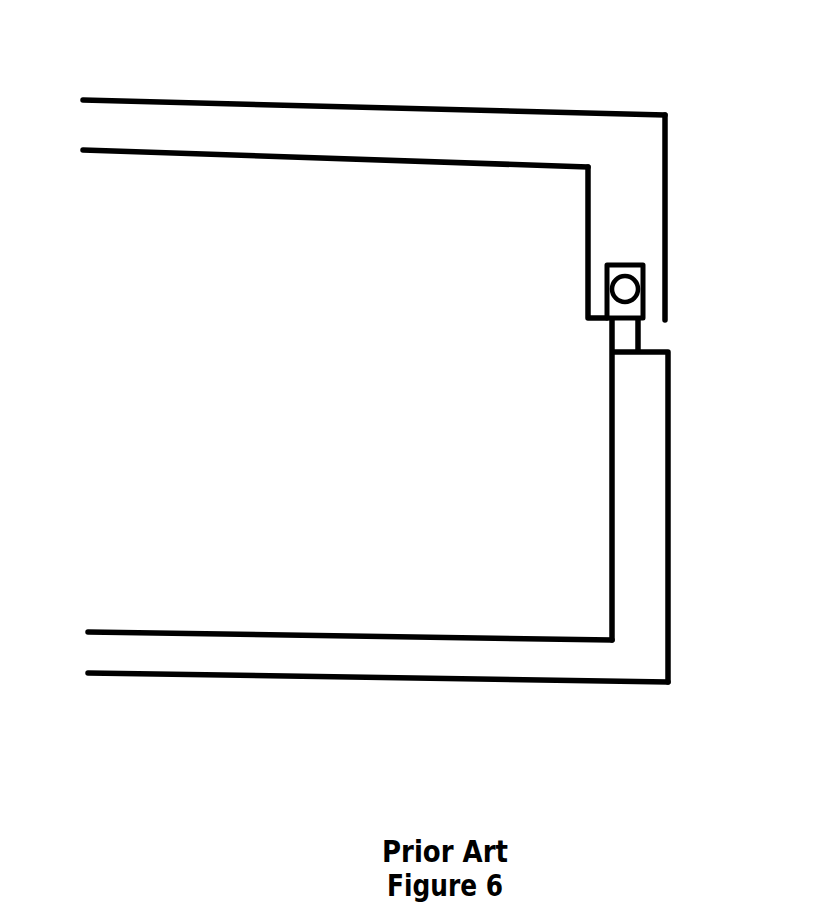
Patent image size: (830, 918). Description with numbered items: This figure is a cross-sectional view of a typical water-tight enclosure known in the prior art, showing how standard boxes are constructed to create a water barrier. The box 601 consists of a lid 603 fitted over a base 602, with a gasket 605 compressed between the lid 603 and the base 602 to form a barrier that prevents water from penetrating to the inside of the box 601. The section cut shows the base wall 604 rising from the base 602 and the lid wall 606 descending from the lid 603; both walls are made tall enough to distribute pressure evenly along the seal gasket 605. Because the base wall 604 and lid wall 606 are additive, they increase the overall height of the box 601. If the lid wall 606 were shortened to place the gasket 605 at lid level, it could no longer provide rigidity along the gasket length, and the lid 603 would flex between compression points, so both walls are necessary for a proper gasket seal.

The box 601 is at (428, 404).
The base 602 is at (540, 655).
The lid 603 is at (443, 135).
The base wall 604 is at (632, 415).
The gasket 605 is at (636, 297).
The lid wall 606 is at (622, 163).